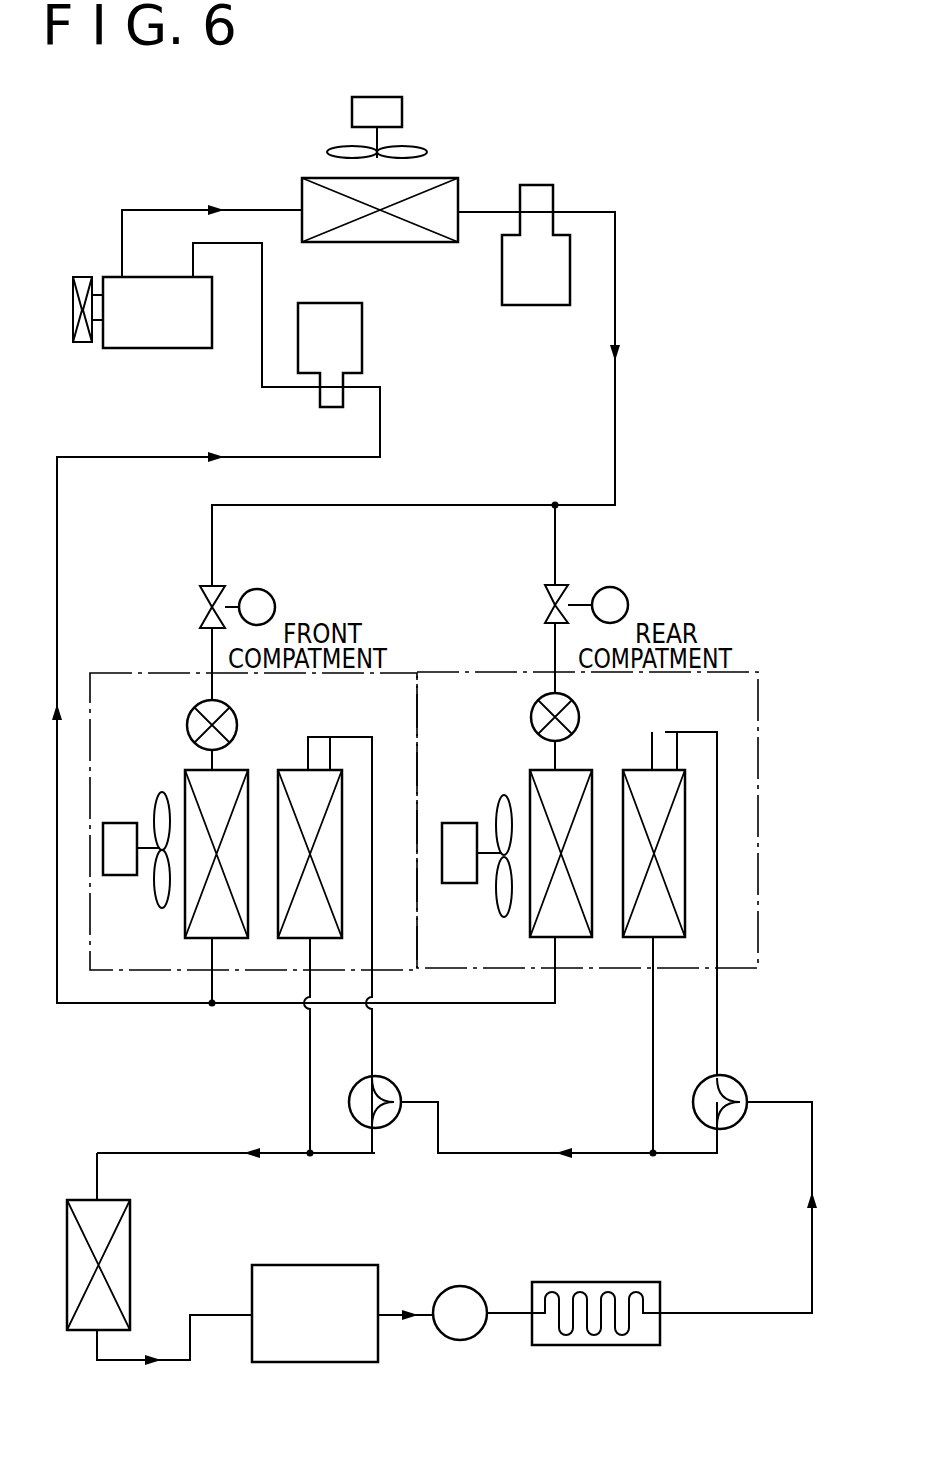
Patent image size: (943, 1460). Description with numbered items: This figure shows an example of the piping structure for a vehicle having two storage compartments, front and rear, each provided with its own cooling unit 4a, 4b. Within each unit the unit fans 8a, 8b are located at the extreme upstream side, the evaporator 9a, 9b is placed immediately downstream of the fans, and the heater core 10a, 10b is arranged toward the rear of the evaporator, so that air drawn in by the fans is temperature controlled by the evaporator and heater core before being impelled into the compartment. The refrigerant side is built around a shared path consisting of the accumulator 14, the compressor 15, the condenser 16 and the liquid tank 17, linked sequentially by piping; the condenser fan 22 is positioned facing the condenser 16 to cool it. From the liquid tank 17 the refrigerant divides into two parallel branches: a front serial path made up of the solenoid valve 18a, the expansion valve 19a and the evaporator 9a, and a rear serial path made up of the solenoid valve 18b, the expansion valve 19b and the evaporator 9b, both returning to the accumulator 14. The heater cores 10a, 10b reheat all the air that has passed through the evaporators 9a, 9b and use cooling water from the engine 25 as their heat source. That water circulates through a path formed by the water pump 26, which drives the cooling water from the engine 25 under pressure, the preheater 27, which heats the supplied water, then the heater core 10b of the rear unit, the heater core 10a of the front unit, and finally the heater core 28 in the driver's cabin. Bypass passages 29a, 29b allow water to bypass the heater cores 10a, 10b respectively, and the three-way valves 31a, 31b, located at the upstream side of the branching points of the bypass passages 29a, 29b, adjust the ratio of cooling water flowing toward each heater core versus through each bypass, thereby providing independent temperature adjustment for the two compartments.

The cooling unit 4a is at (133, 706).
The cooling unit 4b is at (480, 690).
The unit fans 8a is at (117, 823).
The unit fans 8b is at (462, 823).
The evaporator 9a is at (245, 795).
The evaporator 9b is at (573, 773).
The heater core 10a is at (323, 773).
The heater core 10b is at (667, 773).
The accumulator 14 is at (362, 333).
The compressor 15 is at (175, 348).
The condenser 16 is at (418, 242).
The liquid tank 17 is at (532, 305).
The solenoid valve 18a is at (200, 596).
The solenoid valve 18b is at (545, 595).
The expansion valve 19a is at (236, 716).
The expansion valve 19b is at (532, 717).
The condenser fan 22 is at (402, 110).
The engine 25 is at (307, 1265).
The water pump 26 is at (463, 1290).
The preheater 27 is at (598, 1282).
The heater core 28 is at (130, 1237).
The bypass passage 29a is at (347, 1153).
The bypass passage 29b is at (683, 1153).
The 3-way valve 31a is at (398, 1088).
The 3-way valve 31b is at (735, 1078).